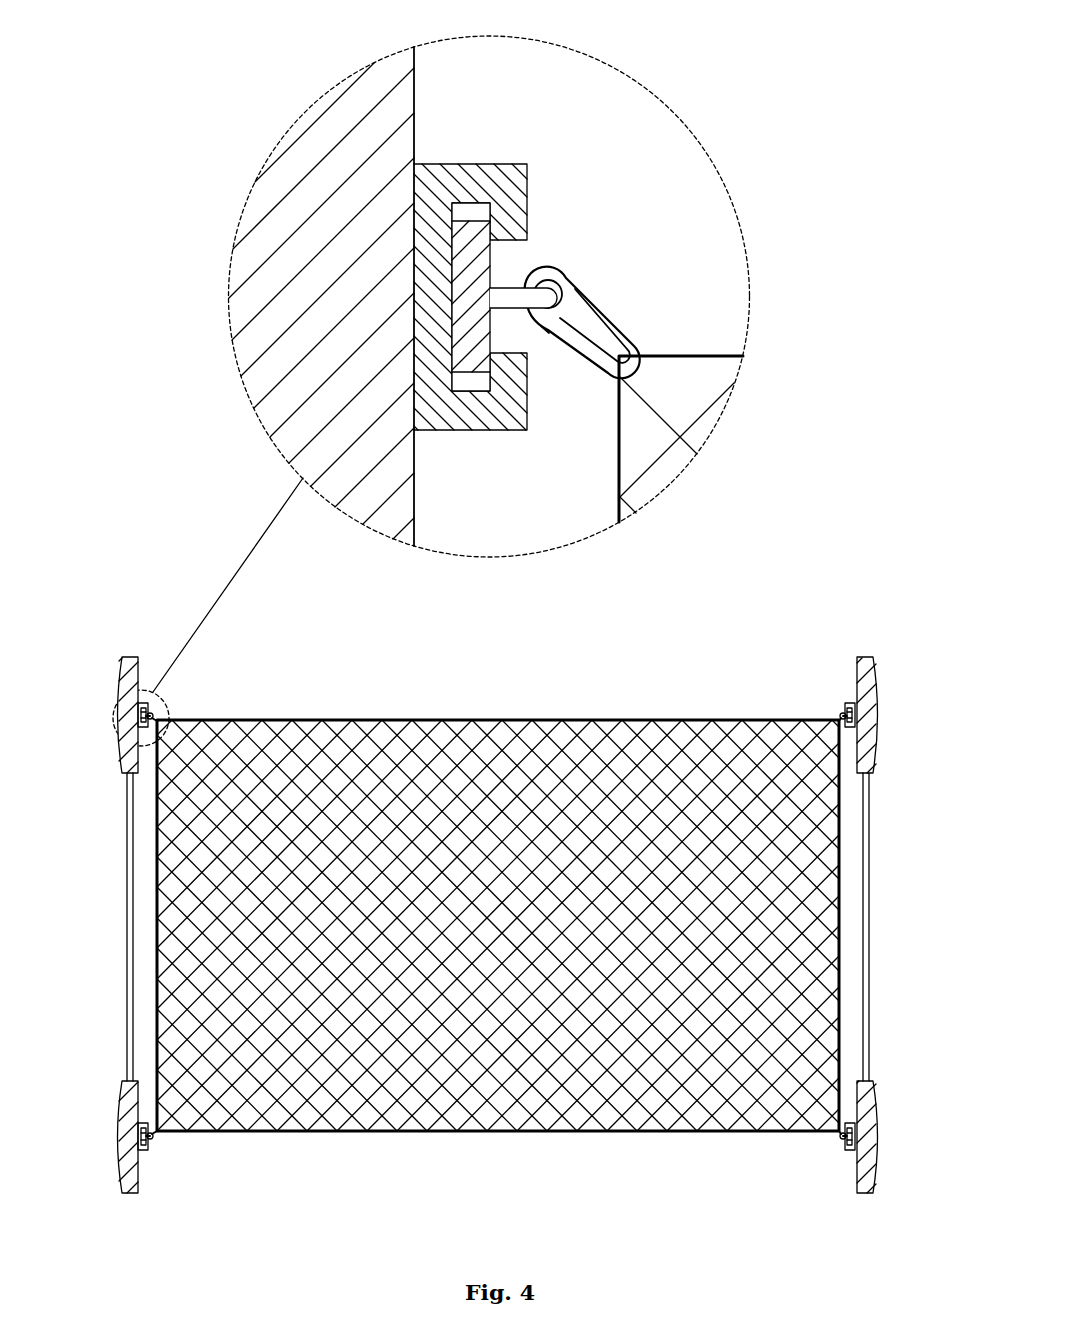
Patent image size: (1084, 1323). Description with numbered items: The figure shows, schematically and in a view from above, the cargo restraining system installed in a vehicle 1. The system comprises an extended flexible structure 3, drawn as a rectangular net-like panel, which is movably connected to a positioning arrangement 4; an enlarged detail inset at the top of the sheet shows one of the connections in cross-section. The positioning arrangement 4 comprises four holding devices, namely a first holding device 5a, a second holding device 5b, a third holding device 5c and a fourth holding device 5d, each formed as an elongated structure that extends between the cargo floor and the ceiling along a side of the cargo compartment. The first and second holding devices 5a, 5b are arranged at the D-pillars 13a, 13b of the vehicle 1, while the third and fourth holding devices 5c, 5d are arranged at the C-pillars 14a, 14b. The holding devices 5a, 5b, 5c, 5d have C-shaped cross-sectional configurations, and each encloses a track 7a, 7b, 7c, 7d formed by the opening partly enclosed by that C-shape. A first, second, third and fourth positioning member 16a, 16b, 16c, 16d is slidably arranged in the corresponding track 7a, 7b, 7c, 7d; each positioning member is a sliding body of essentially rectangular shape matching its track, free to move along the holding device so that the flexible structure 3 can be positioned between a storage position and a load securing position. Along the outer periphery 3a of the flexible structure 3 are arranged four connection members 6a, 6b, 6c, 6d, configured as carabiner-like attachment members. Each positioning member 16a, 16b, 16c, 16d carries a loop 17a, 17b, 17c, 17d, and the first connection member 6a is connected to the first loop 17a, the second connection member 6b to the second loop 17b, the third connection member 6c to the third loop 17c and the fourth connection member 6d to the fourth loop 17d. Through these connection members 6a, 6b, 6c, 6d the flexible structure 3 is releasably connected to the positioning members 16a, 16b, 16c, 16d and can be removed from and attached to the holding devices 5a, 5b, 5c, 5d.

The vehicle 1 is at (130, 1099).
The flexible structure 3 is at (707, 415).
The outer periphery 3a is at (490, 719).
The positioning arrangement 4 is at (515, 118).
The first holding device 5a is at (160, 1173).
The second holding device 5b is at (838, 1168).
The third holding device 5c is at (528, 202).
The fourth holding device 5d is at (835, 681).
The first connection member 6a is at (150, 1138).
The second connection member 6b is at (845, 1138).
The third connection member 6c is at (603, 307).
The fourth connection member 6d is at (838, 712).
The first track 7a is at (203, 1181).
The second track 7b is at (787, 1181).
The third track 7c is at (527, 258).
The fourth track 7d is at (787, 672).
The D-pillar 13a is at (127, 1158).
The D-pillar 13b is at (868, 1158).
The C-pillar 14a is at (321, 181).
The C-pillar 14b is at (868, 737).
The first positioning member 16a is at (227, 1184).
The second positioning member 16b is at (807, 1184).
The third positioning member 16c is at (472, 292).
The fourth positioning member 16d is at (807, 670).
The first loop 17a is at (138, 1128).
The second loop 17b is at (856, 1128).
The third loop 17c is at (542, 298).
The fourth loop 17d is at (856, 706).